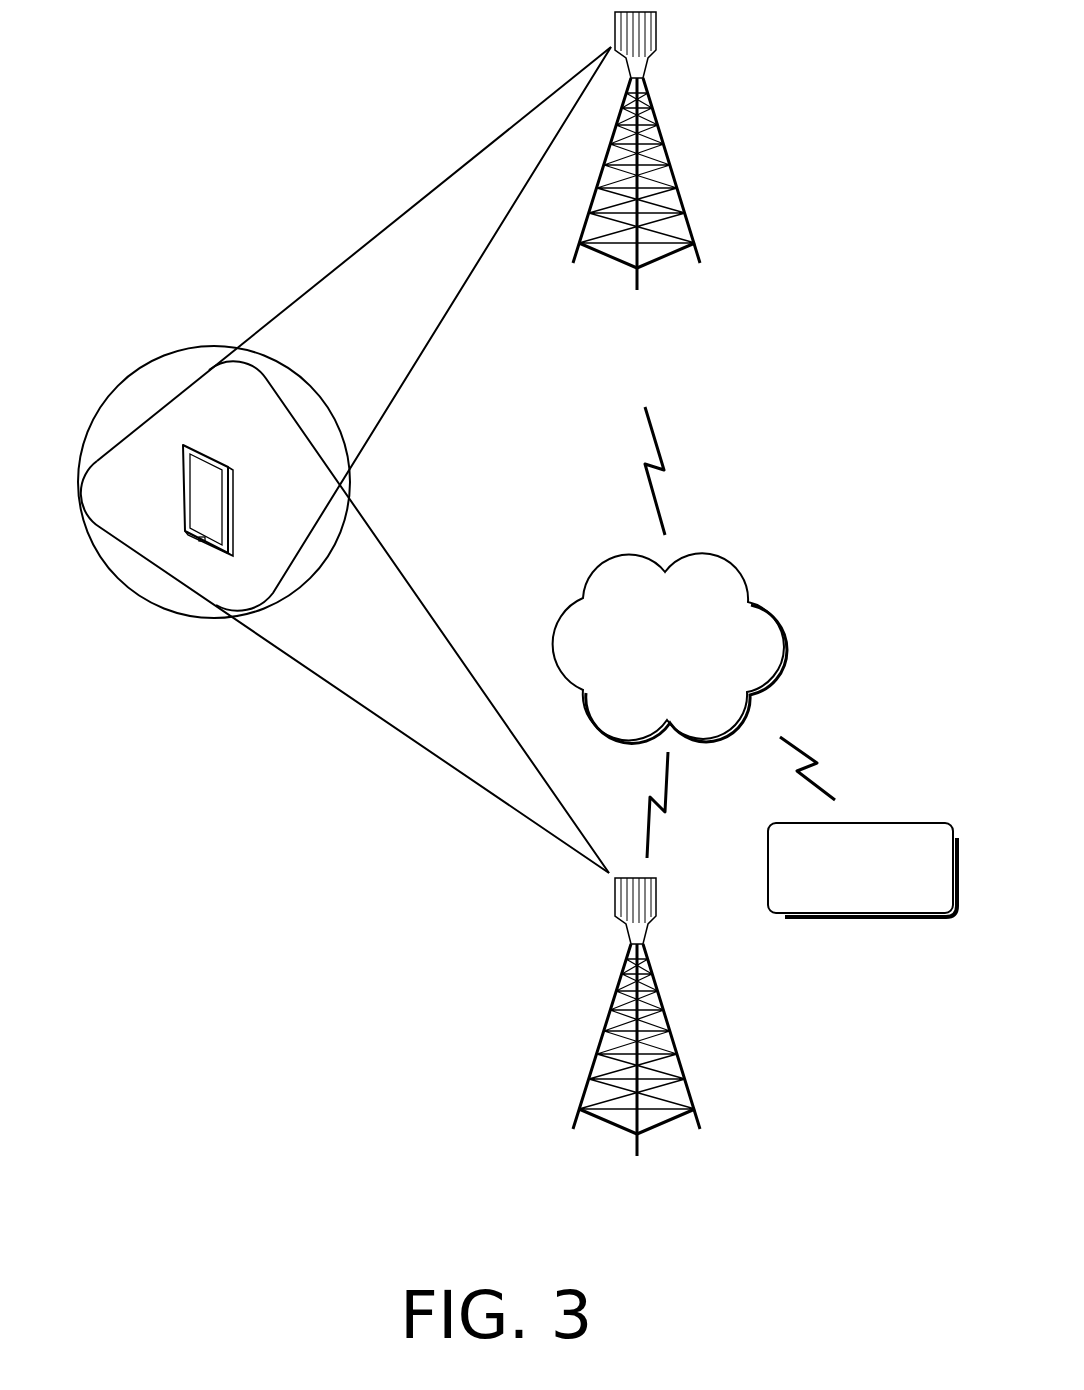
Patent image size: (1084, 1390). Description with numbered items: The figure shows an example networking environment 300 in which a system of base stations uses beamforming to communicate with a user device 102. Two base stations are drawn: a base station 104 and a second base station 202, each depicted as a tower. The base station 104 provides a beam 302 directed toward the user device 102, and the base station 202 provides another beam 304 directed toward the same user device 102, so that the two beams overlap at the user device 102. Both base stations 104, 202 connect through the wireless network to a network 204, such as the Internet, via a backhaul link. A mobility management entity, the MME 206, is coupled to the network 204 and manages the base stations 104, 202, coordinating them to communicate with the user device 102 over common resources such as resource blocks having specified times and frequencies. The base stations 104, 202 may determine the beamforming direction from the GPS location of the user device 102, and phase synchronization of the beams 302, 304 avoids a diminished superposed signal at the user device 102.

The networking environment 300 is at (142, 53).
The beam 302 is at (353, 248).
The beam 304 is at (368, 710).
The user device 102 is at (190, 548).
The base station 104 is at (698, 370).
The base station 202 is at (698, 1235).
The network 204 is at (733, 657).
The mobility management entity (MME) 206 is at (908, 880).